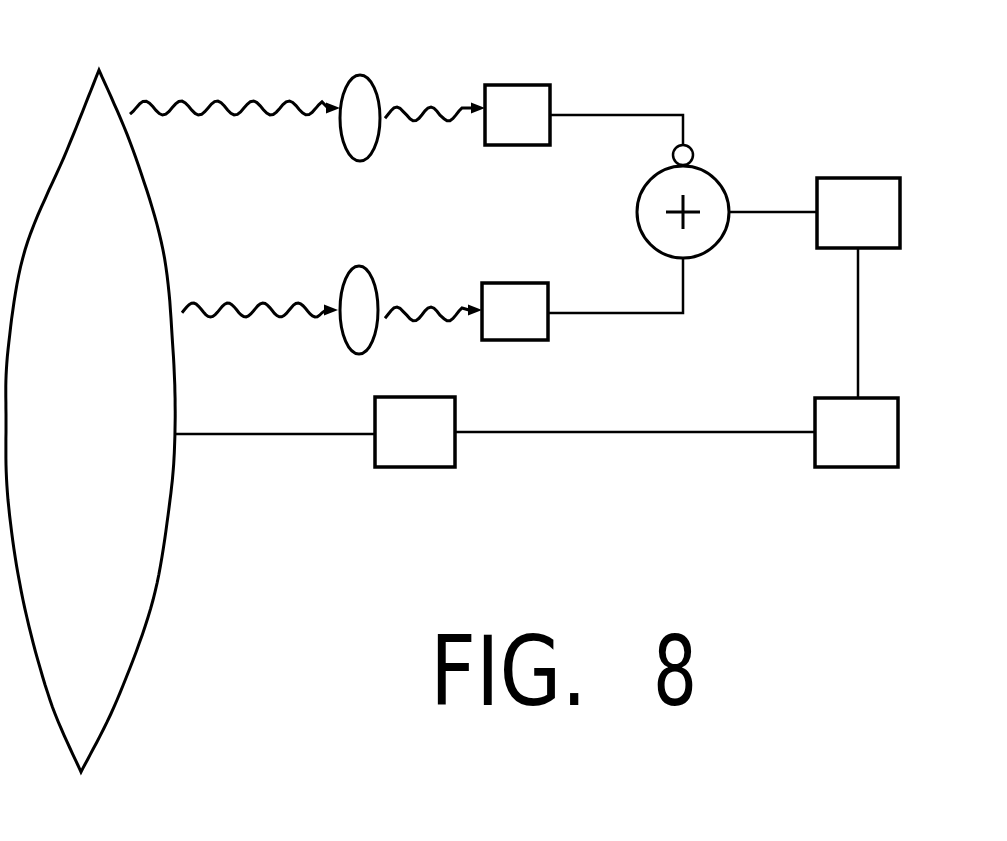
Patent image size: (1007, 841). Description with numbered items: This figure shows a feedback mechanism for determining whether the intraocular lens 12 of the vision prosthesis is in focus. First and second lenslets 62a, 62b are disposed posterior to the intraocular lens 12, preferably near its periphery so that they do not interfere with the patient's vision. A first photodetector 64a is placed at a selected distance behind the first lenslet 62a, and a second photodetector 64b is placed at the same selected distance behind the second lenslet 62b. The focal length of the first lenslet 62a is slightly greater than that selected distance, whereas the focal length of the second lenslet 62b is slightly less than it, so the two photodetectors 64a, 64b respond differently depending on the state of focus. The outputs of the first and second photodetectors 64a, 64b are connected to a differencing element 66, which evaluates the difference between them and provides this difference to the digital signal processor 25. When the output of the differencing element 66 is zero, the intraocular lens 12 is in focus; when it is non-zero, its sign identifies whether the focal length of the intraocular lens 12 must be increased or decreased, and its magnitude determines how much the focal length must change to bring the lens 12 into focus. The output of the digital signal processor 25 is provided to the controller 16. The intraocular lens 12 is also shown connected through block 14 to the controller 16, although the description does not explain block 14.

The intraocular lens 12 is at (105, 297).
The positioning unit 14 is at (432, 452).
The controller 16 is at (875, 449).
The digital signal processor 25 is at (882, 231).
The first lenslet 62a is at (377, 82).
The second lenslet 62b is at (362, 265).
The first photodetector 64a is at (512, 85).
The second photodetector 64b is at (518, 341).
The differencing element 66 is at (642, 187).